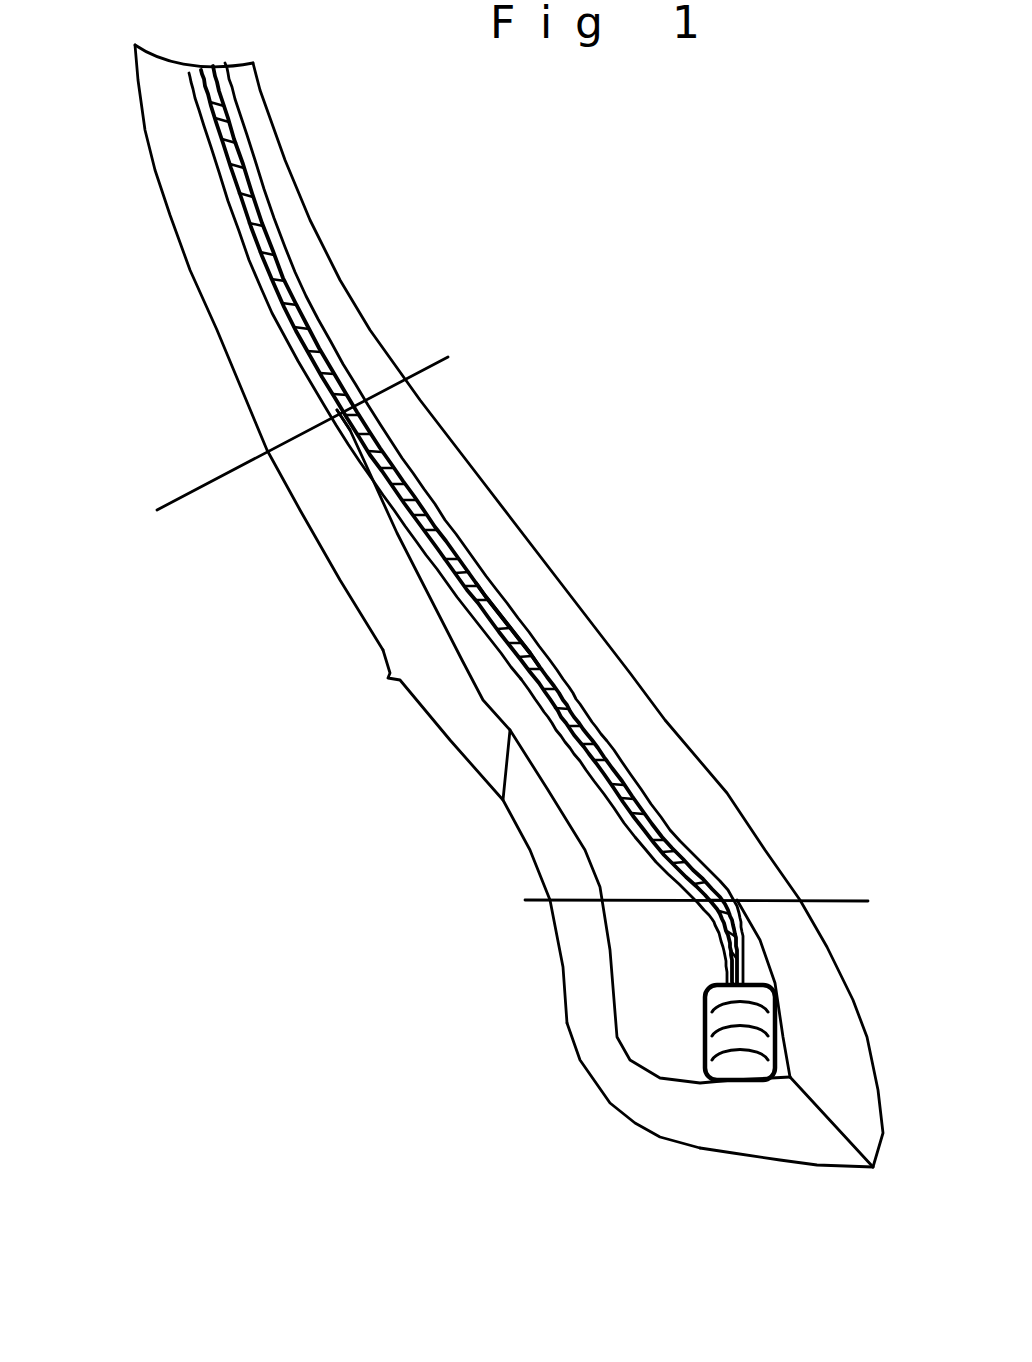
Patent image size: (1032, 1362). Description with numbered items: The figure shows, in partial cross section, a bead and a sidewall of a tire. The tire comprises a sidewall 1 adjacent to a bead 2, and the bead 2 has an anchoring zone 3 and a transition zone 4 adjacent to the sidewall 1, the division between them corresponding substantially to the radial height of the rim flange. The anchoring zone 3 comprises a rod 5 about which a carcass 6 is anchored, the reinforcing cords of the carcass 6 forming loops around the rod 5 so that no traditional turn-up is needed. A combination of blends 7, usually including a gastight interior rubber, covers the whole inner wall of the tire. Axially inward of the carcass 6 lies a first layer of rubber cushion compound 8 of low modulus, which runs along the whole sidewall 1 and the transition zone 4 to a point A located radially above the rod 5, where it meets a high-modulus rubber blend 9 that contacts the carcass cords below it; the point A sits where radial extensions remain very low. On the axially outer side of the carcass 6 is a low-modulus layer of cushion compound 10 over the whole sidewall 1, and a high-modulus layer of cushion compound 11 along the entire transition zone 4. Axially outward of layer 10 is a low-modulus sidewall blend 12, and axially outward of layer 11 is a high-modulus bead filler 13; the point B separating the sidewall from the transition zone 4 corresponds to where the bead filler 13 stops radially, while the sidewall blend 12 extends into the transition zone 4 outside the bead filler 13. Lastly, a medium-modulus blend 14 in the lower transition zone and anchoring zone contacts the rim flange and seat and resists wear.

The sidewall 1 is at (140, 258).
The bead 2 is at (390, 764).
The anchoring zone 3 is at (557, 1086).
The transition zone 4 is at (350, 718).
The rod 5 is at (757, 1052).
The carcass 6 is at (370, 417).
The combination of blends 7 is at (553, 612).
The first layer of rubber cushion compound 8 is at (465, 550).
The rubber blend 9 is at (753, 948).
The layer of cushion compound 10 is at (222, 172).
The layer of cushion compound 11 is at (647, 840).
The sidewall blend 12 is at (228, 257).
The bead filler 13 is at (537, 722).
The blend 14 is at (728, 1110).
The point of contact A is at (743, 900).
The point B is at (337, 410).